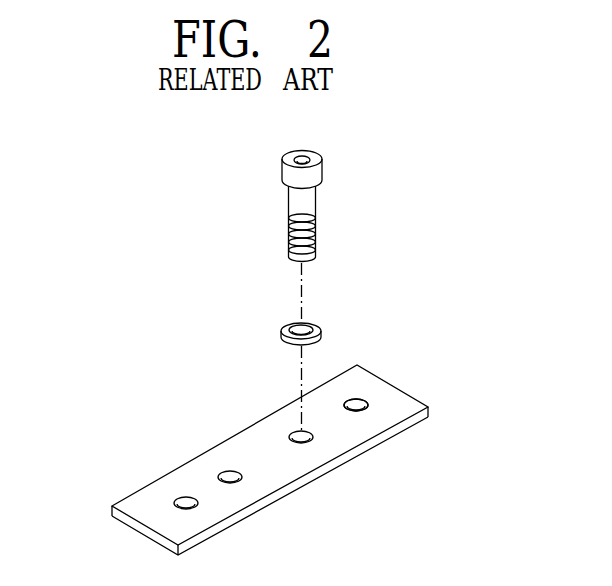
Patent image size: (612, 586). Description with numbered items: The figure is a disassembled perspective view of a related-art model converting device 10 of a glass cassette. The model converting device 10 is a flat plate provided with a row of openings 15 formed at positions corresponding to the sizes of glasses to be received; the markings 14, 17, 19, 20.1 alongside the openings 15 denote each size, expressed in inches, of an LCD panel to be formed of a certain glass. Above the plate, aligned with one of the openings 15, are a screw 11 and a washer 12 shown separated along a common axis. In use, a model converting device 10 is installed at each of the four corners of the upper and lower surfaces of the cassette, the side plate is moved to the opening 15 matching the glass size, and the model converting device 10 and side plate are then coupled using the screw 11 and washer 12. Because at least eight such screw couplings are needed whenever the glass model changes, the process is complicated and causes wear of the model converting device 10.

The model converting device 10 is at (392, 407).
The screw 11 is at (308, 178).
The washer 12 is at (322, 333).
The size marking 14 is at (174, 489).
The openings 15 is at (355, 411).
The size marking 17 is at (218, 463).
The size marking 19 is at (288, 423).
The size marking 20.1 is at (340, 390).